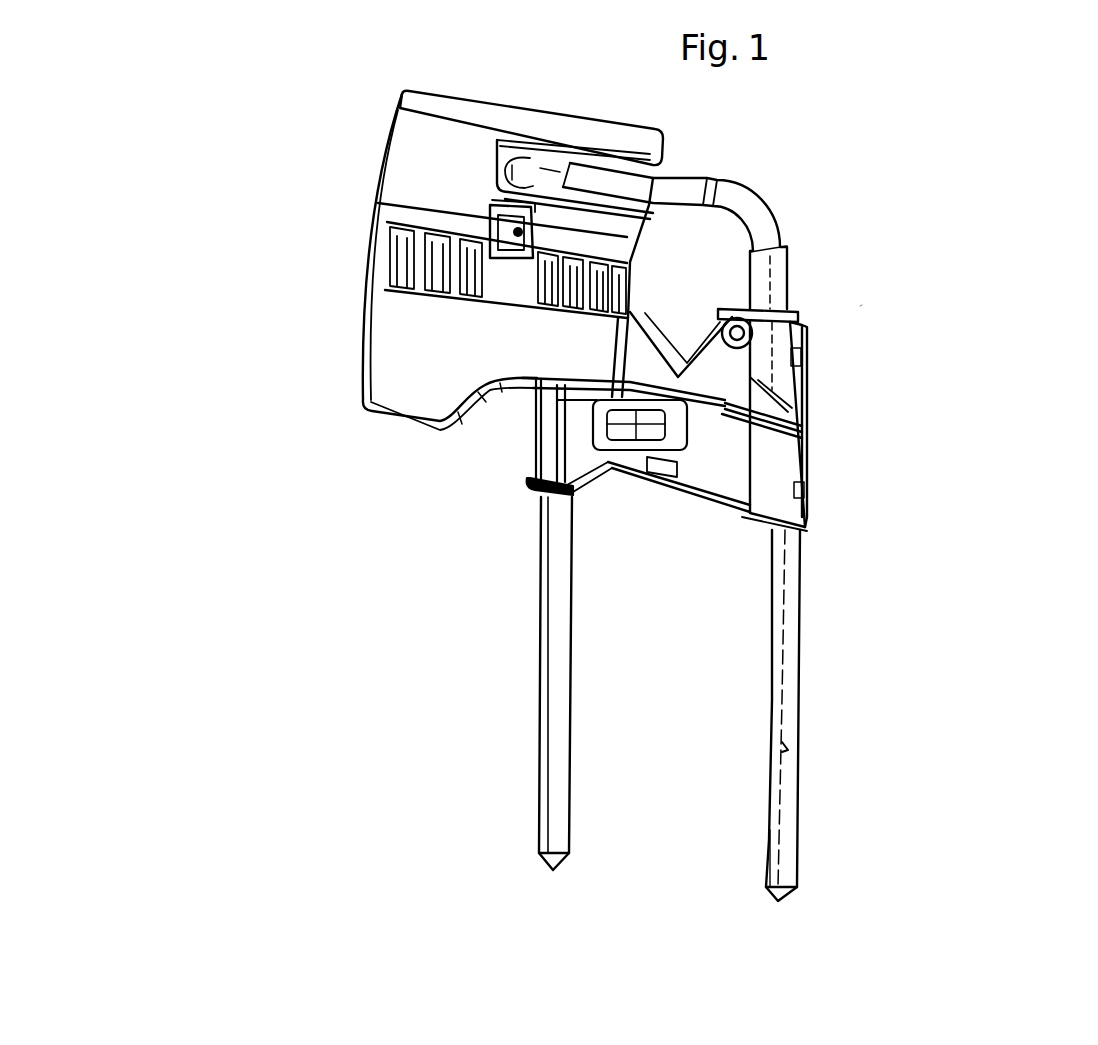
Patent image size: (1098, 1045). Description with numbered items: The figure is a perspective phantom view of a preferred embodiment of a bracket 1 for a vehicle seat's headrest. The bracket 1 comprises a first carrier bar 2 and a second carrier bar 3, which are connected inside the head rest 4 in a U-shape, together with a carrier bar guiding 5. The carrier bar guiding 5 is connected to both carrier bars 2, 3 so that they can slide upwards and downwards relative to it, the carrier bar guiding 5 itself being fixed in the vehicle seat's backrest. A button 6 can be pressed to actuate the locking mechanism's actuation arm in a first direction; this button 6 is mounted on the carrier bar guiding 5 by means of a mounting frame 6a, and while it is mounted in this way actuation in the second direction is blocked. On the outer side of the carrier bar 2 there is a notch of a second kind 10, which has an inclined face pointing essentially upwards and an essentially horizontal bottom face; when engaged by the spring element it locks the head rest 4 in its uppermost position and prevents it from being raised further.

The bracket 1 is at (862, 305).
The first carrier bar 2 is at (793, 640).
The second carrier bar 3 is at (560, 683).
The head rest 4 is at (427, 357).
The carrier bar guiding 5 is at (773, 483).
The button 6 is at (595, 457).
The mounting frame 6a is at (598, 410).
The notch of a second kind 10 is at (793, 747).